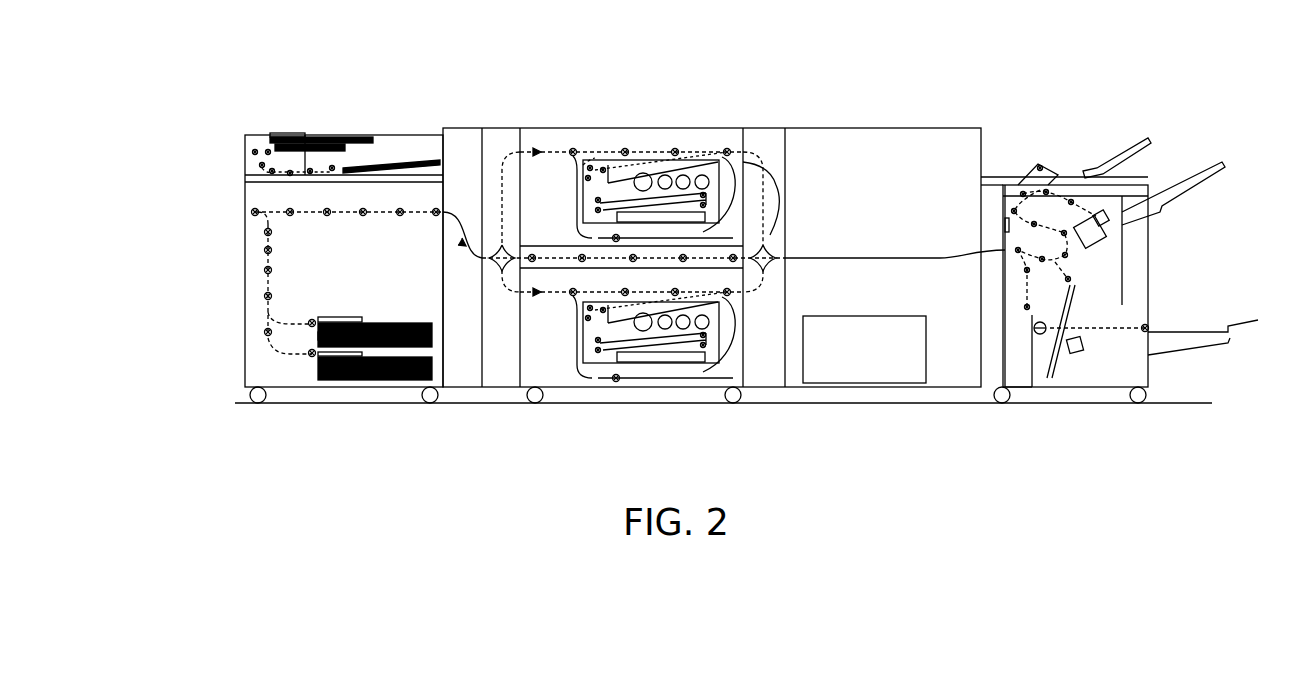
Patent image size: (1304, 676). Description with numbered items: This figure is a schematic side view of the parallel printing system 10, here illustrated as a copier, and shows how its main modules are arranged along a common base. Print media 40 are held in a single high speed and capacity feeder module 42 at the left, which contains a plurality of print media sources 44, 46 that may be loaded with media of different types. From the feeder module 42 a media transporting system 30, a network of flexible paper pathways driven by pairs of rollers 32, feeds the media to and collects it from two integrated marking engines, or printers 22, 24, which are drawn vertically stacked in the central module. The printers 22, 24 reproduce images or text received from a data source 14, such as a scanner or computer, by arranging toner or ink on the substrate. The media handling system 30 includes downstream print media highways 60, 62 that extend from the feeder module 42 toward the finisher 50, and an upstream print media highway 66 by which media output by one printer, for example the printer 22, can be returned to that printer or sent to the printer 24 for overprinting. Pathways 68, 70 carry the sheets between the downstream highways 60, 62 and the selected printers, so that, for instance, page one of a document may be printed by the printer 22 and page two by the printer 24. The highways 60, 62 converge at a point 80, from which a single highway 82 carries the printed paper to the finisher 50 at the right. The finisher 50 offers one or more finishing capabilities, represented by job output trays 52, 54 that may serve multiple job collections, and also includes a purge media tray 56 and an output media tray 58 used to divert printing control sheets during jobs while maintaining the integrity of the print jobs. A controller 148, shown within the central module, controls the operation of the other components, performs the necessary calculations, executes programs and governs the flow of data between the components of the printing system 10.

The parallel printing system 10 is at (304, 98).
The data source 14 is at (245, 152).
The marking engine 22 is at (596, 135).
The marking engine 24 is at (669, 392).
The media transporting system 30 is at (505, 158).
The rollers 32 is at (568, 146).
The print media 40 is at (402, 322).
The feeder module 42 is at (245, 278).
The print media source 44 is at (318, 341).
The print media source 46 is at (318, 366).
The finisher 50 is at (1026, 162).
The output tray 52 is at (1185, 187).
The output tray 54 is at (1191, 328).
The purge media tray 56 is at (1020, 392).
The output media tray 58 is at (1120, 150).
The downstream print media highway 60 is at (652, 150).
The downstream print media highway 62 is at (558, 292).
The upstream print media highway 66 is at (590, 257).
The pathway 68 is at (572, 170).
The pathway 70 is at (748, 170).
The convergence point 80 is at (775, 238).
The single highway 82 is at (908, 257).
The controller 148 is at (885, 316).